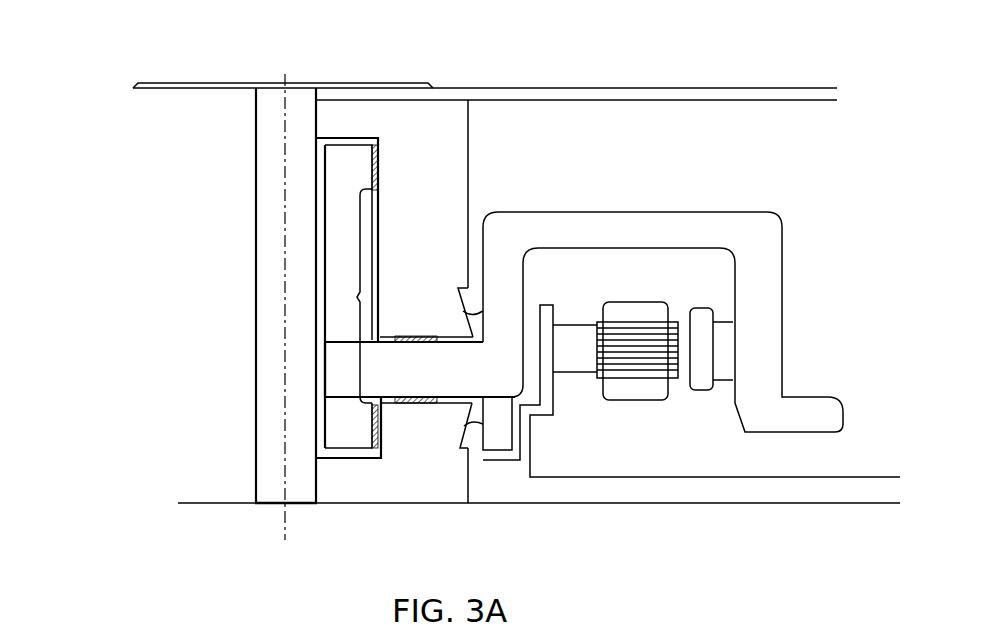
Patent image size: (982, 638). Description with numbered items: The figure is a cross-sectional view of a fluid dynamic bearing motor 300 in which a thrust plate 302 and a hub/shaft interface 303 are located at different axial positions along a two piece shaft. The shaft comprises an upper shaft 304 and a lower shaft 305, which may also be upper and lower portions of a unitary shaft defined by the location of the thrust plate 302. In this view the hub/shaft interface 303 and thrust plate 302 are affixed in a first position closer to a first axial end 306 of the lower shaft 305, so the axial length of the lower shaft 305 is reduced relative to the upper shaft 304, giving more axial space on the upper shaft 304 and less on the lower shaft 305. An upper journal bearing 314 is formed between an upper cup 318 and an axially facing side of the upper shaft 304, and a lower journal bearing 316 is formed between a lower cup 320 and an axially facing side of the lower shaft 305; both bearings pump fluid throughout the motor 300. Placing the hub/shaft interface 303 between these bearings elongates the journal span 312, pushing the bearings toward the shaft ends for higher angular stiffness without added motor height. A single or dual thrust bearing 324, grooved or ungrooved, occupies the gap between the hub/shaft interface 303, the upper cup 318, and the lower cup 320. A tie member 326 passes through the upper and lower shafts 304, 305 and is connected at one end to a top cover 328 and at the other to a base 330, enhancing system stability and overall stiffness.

The fluid dynamic bearing motor 300 is at (95, 112).
The thrust plate 302 is at (420, 369).
The hub/shaft interface 303 is at (326, 373).
The upper shaft 304 is at (347, 223).
The lower shaft 305 is at (350, 424).
The first axial end 306 is at (338, 460).
The journal span 312 is at (357, 297).
The upper journal bearing 314 is at (378, 170).
The lower journal bearing 316 is at (375, 455).
The upper cup 318 is at (458, 143).
The lower cup 320 is at (455, 470).
The thrust bearing 324 is at (437, 342).
The tie member 326 is at (270, 477).
The top cover 328 is at (268, 81).
The base 330 is at (215, 504).